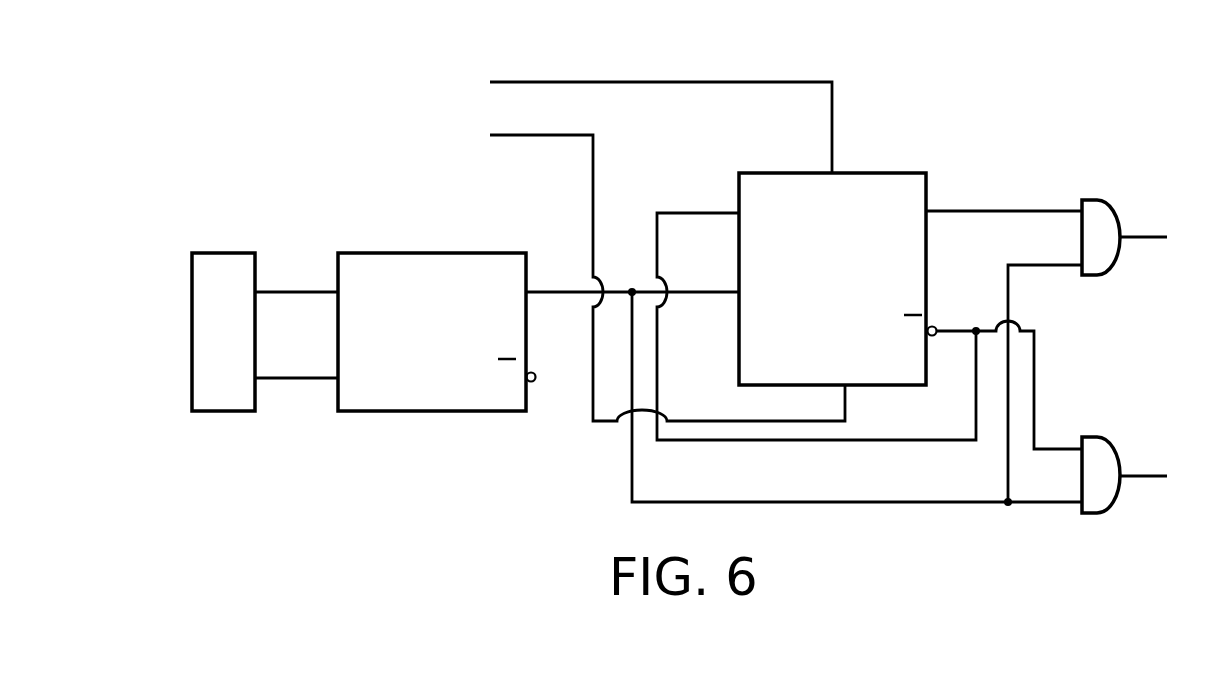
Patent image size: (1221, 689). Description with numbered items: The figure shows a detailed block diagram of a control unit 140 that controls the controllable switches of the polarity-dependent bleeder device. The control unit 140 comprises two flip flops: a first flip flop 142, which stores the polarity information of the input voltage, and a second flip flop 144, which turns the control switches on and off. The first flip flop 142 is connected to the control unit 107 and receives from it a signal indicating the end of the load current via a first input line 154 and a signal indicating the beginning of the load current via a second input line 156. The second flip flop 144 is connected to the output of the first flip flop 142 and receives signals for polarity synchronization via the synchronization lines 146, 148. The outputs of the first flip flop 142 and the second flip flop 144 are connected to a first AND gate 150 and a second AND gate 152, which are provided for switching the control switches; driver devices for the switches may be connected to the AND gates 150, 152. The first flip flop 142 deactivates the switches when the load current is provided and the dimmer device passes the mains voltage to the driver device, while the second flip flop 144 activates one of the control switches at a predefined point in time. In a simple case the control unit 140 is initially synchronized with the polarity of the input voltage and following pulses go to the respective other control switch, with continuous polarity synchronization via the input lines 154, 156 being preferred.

The control unit 140 is at (306, 130).
The control unit 107 is at (221, 412).
The first flip flop 142 is at (441, 412).
The second flip flop 144 is at (900, 172).
The synchronization line 146 is at (673, 80).
The synchronization line 148 is at (535, 137).
The first AND gate 150 is at (1096, 209).
The second AND gate 152 is at (1096, 445).
The first input line 154 is at (300, 294).
The second input line 156 is at (300, 380).